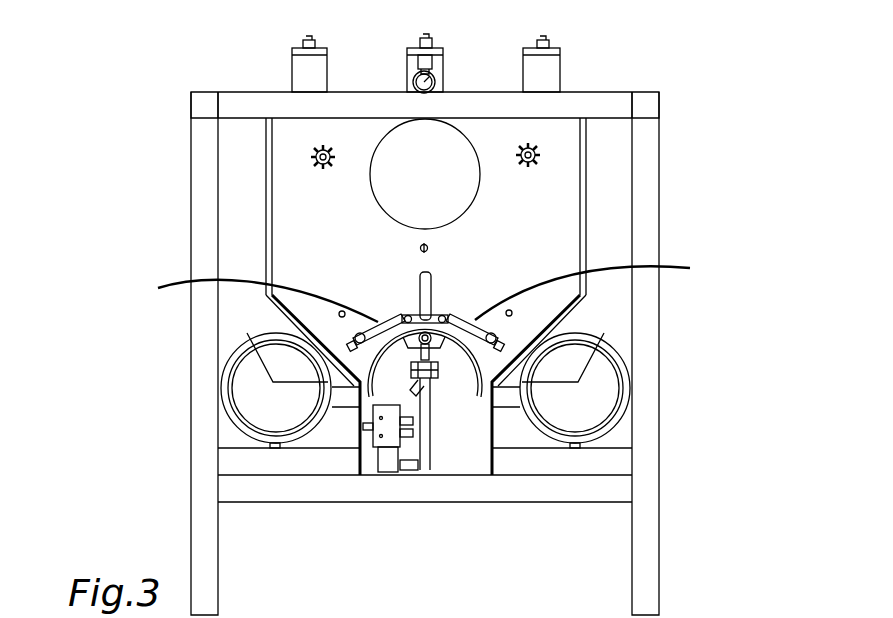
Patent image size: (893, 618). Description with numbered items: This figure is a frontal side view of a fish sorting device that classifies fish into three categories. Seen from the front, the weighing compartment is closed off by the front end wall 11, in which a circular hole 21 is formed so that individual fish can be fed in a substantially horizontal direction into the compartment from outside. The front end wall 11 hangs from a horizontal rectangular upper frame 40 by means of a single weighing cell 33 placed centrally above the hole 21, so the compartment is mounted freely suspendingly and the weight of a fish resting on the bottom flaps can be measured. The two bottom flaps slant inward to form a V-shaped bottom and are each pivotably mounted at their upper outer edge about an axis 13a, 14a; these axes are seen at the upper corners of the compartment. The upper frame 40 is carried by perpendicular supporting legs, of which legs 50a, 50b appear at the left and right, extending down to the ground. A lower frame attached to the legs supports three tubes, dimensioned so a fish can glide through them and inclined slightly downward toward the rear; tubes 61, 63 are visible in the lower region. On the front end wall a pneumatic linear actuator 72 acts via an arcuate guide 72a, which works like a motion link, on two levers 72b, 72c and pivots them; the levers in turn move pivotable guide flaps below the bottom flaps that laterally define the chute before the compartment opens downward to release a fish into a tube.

The front end wall 11 is at (342, 249).
The pivot axis of first bottom flap 13a is at (316, 152).
The pivot axis of second bottom flap 14a is at (530, 150).
The circular hole 21 is at (433, 162).
The weighing cell 33 is at (422, 80).
The upper frame 40 is at (370, 103).
The supporting leg 50a is at (648, 225).
The supporting leg 50b is at (200, 216).
The tube 61 is at (278, 417).
The tube 63 is at (598, 417).
The pneumatic linear actuator 72 is at (425, 438).
The arcuate guide 72a is at (438, 335).
The lever 72b is at (607, 288).
The lever 72c is at (235, 299).